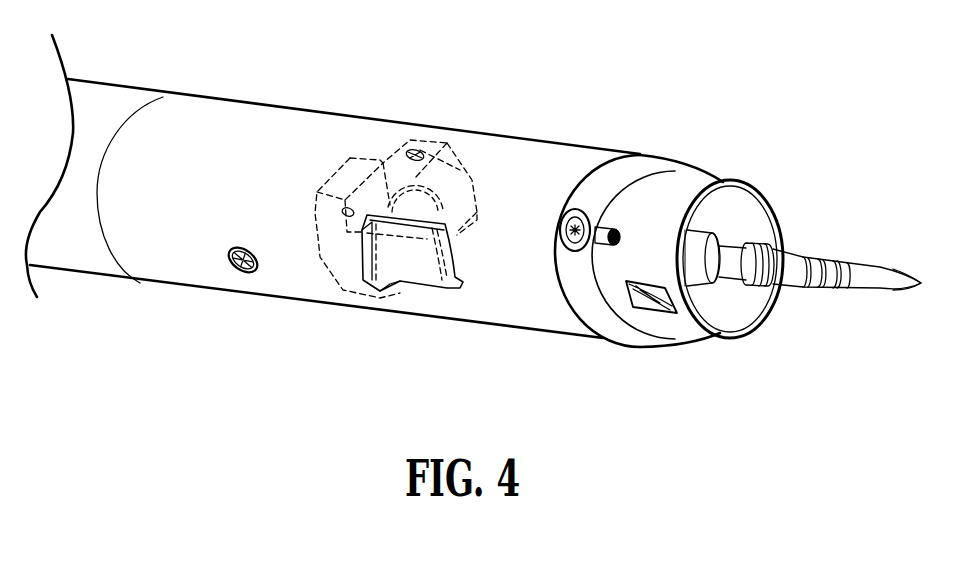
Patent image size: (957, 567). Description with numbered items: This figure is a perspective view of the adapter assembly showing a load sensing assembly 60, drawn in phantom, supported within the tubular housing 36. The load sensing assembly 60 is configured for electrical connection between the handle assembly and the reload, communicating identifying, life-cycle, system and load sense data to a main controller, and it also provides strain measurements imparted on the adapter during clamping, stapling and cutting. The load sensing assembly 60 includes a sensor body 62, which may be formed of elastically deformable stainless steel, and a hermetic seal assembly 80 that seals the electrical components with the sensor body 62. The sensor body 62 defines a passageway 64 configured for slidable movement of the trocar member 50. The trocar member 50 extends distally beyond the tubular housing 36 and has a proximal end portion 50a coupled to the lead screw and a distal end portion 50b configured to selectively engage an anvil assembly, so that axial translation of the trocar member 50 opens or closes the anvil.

The tubular housing 36 is at (300, 93).
The load sensing assembly 60 is at (413, 129).
The sensor body 62 is at (457, 167).
The passageway 64 is at (437, 203).
The hermetic seal assembly 80 is at (422, 280).
The trocar member 50 is at (807, 224).
The proximal end portion 50a is at (697, 237).
The distal end portion 50b is at (893, 278).